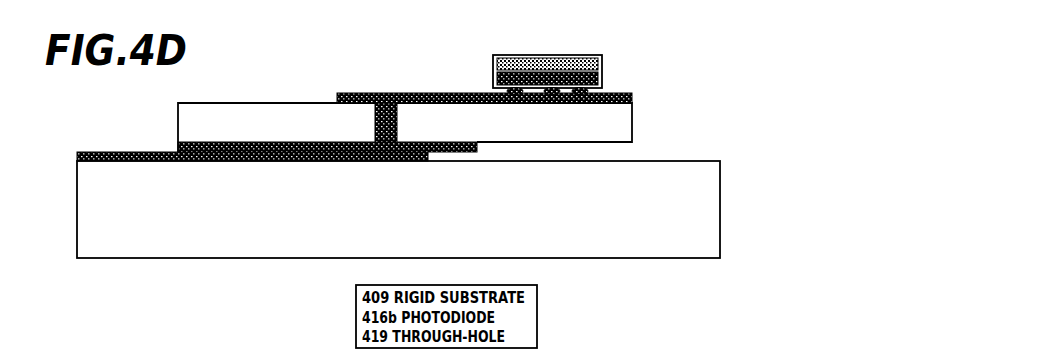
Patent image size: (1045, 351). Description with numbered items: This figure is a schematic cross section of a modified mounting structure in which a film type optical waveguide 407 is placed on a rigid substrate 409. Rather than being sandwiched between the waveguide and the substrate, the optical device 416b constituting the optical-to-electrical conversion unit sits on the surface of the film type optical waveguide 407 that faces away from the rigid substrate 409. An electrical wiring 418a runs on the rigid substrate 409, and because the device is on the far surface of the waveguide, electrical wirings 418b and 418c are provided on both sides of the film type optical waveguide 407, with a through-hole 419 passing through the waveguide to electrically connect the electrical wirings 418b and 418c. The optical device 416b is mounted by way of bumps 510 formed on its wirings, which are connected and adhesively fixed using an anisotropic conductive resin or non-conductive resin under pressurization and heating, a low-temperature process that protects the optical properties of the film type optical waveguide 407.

The film type optical waveguide 407 is at (610, 118).
The rigid substrate 409 is at (552, 180).
The optical device 416b is at (495, 65).
The electrical wiring 418a is at (128, 153).
The electrical wiring 418b is at (192, 144).
The electrical wiring 418c is at (400, 93).
The through-hole 419 is at (378, 116).
The bumps 510 is at (602, 78).